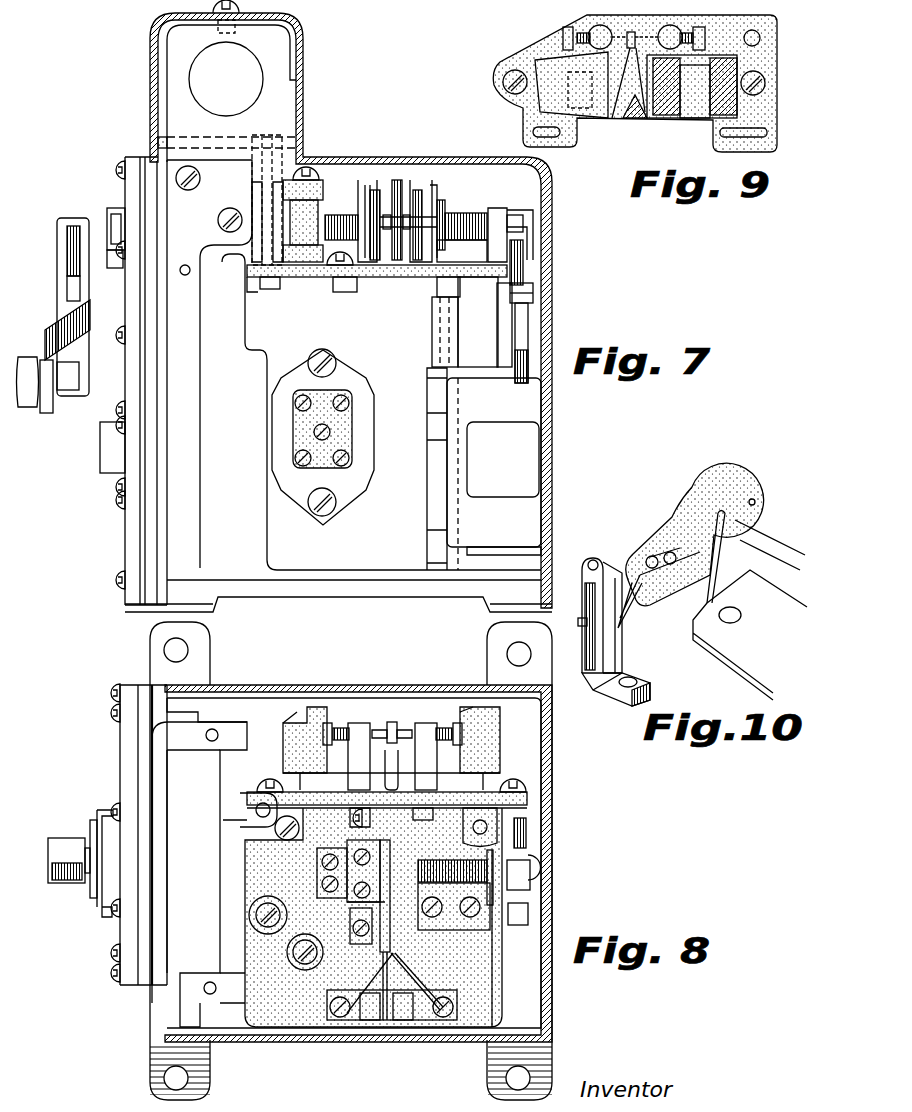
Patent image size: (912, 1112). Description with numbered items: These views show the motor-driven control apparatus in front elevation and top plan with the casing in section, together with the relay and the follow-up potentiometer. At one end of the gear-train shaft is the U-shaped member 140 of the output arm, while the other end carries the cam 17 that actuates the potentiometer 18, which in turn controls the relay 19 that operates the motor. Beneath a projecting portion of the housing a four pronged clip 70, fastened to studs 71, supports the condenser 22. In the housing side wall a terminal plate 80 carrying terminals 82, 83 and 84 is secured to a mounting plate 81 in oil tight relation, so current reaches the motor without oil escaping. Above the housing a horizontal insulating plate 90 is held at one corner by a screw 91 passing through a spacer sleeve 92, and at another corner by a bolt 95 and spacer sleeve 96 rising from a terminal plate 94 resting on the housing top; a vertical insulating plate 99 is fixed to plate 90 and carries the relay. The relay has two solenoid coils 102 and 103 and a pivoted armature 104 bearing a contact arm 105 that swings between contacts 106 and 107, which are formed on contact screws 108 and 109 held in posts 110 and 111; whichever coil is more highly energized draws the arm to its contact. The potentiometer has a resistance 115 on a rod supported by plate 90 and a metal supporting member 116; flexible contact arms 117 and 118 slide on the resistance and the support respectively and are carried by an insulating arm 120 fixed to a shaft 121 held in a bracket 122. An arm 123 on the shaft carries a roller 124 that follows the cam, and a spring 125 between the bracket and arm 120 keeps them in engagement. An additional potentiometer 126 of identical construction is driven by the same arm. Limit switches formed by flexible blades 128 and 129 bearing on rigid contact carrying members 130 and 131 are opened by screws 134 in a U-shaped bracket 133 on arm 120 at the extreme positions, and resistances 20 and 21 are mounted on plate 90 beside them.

In FIG. 7, the cam 17 is at (528, 345).
In FIG. 7, the potentiometer 18 is at (400, 178).
In FIG. 9, the relay 19 is at (535, 48).
In FIG. 7, the resistance 20 is at (320, 172).
In FIG. 8, the resistance 20 is at (248, 918).
In FIG. 7, the resistance 21 is at (272, 185).
In FIG. 8, the resistance 21 is at (287, 955).
In FIG. 7, the condenser 22 is at (530, 486).
In FIG. 7, the four pronged clip 70 is at (452, 462).
In FIG. 7, the studs 71 is at (438, 530).
In FIG. 7, the terminal plate 80 is at (352, 435).
In FIG. 7, the mounting plate 81 is at (372, 410).
In FIG. 7, the terminal 82 is at (331, 371).
In FIG. 7, the terminal 83 is at (310, 475).
In FIG. 7, the terminal 84 is at (350, 462).
In FIG. 7, the plate 90 is at (372, 280).
In FIG. 7, the screw 91 is at (438, 325).
In FIG. 7, the spacer sleeve 92 is at (436, 337).
In FIG. 7, the terminal plate 94 is at (160, 140).
In FIG. 7, the bolt 95 is at (260, 130).
In FIG. 7, the spacer sleeve 96 is at (288, 262).
In FIG. 9, the vertical plate 99 is at (525, 119).
In FIG. 9, the coil 102 is at (615, 122).
In FIG. 9, the coil 103 is at (765, 108).
In FIG. 9, the pivoted armature 104 is at (660, 120).
In FIG. 9, the contact arm 105 is at (640, 60).
In FIG. 8, the contact arm 105 is at (394, 722).
In FIG. 9, the contact 106 is at (635, 33).
In FIG. 8, the contact 106 is at (408, 728).
In FIG. 9, the contact 107 is at (677, 32).
In FIG. 8, the contact 107 is at (385, 725).
In FIG. 9, the contact screw 108 is at (560, 34).
In FIG. 8, the contact screw 108 is at (490, 740).
In FIG. 9, the contact screw 109 is at (736, 40).
In FIG. 8, the contact screw 109 is at (327, 725).
In FIG. 9, the post 110 is at (604, 32).
In FIG. 8, the post 110 is at (428, 756).
In FIG. 9, the post 111 is at (709, 34).
In FIG. 8, the post 111 is at (362, 756).
In FIG. 7, the resistance 115 is at (453, 219).
In FIG. 10, the resistance 115 is at (592, 595).
In FIG. 7, the supporting member 116 is at (437, 200).
In FIG. 10, the supporting member 116 is at (623, 660).
In FIG. 10, the flexible contact arm 117 is at (580, 628).
In FIG. 8, the flexible contact arm 117 is at (393, 1020).
In FIG. 7, the flexible contact arm 118 is at (447, 234).
In FIG. 10, the flexible contact arm 118 is at (635, 620).
In FIG. 8, the flexible contact arm 118 is at (415, 985).
In FIG. 10, the arm 120 is at (670, 517).
In FIG. 10, the shaft 121 is at (770, 543).
In FIG. 7, the bracket 122 is at (505, 214).
In FIG. 8, the bracket 122 is at (480, 925).
In FIG. 7, the arm 123 is at (532, 250).
In FIG. 7, the roller 124 is at (533, 293).
In FIG. 7, the spring 125 is at (466, 213).
In FIG. 7, the additional potentiometer 126 is at (345, 212).
In FIG. 8, the additional potentiometer 126 is at (352, 978).
In FIG. 8, the flexible switch blade 128 is at (374, 845).
In FIG. 8, the flexible switch blade 129 is at (350, 918).
In FIG. 8, the rigid contact carrying member 130 is at (317, 860).
In FIG. 8, the rigid contact carrying member 131 is at (317, 884).
In FIG. 8, the U-shaped bracket 133 is at (345, 902).
In FIG. 8, the screw 134 is at (362, 871).
In FIG. 7, the U-shaped member 140 is at (68, 220).